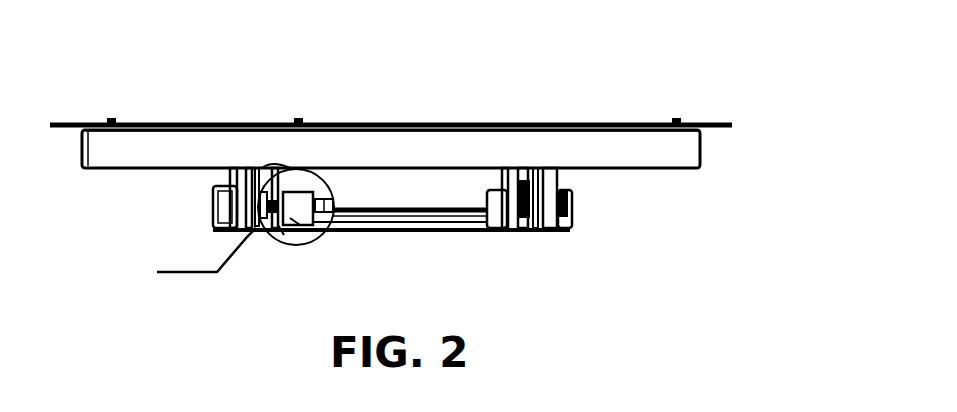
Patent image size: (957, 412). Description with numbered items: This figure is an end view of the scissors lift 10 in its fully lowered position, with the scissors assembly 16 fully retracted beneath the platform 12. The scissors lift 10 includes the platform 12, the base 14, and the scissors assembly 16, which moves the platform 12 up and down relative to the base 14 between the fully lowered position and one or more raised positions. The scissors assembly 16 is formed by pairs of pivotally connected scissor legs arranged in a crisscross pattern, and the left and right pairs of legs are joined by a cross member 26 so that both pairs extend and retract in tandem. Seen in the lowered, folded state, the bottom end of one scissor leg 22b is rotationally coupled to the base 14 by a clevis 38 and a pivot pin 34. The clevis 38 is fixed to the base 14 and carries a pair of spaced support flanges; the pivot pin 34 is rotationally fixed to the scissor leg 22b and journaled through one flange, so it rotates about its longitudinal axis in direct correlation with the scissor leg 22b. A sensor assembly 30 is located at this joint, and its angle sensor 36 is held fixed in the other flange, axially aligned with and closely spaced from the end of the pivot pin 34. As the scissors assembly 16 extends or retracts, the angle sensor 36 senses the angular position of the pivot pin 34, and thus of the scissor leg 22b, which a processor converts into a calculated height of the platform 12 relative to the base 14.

The scissors lift 10 is at (712, 78).
The platform 12 is at (643, 112).
The base 14 is at (472, 238).
The scissors assembly 16 is at (572, 220).
The scissor leg 22b is at (280, 195).
The cross member 26 is at (383, 223).
The sensor assembly 30 is at (297, 236).
The pivot pin 34 is at (250, 207).
The angle sensor 36 is at (314, 194).
The clevis 38 is at (282, 237).